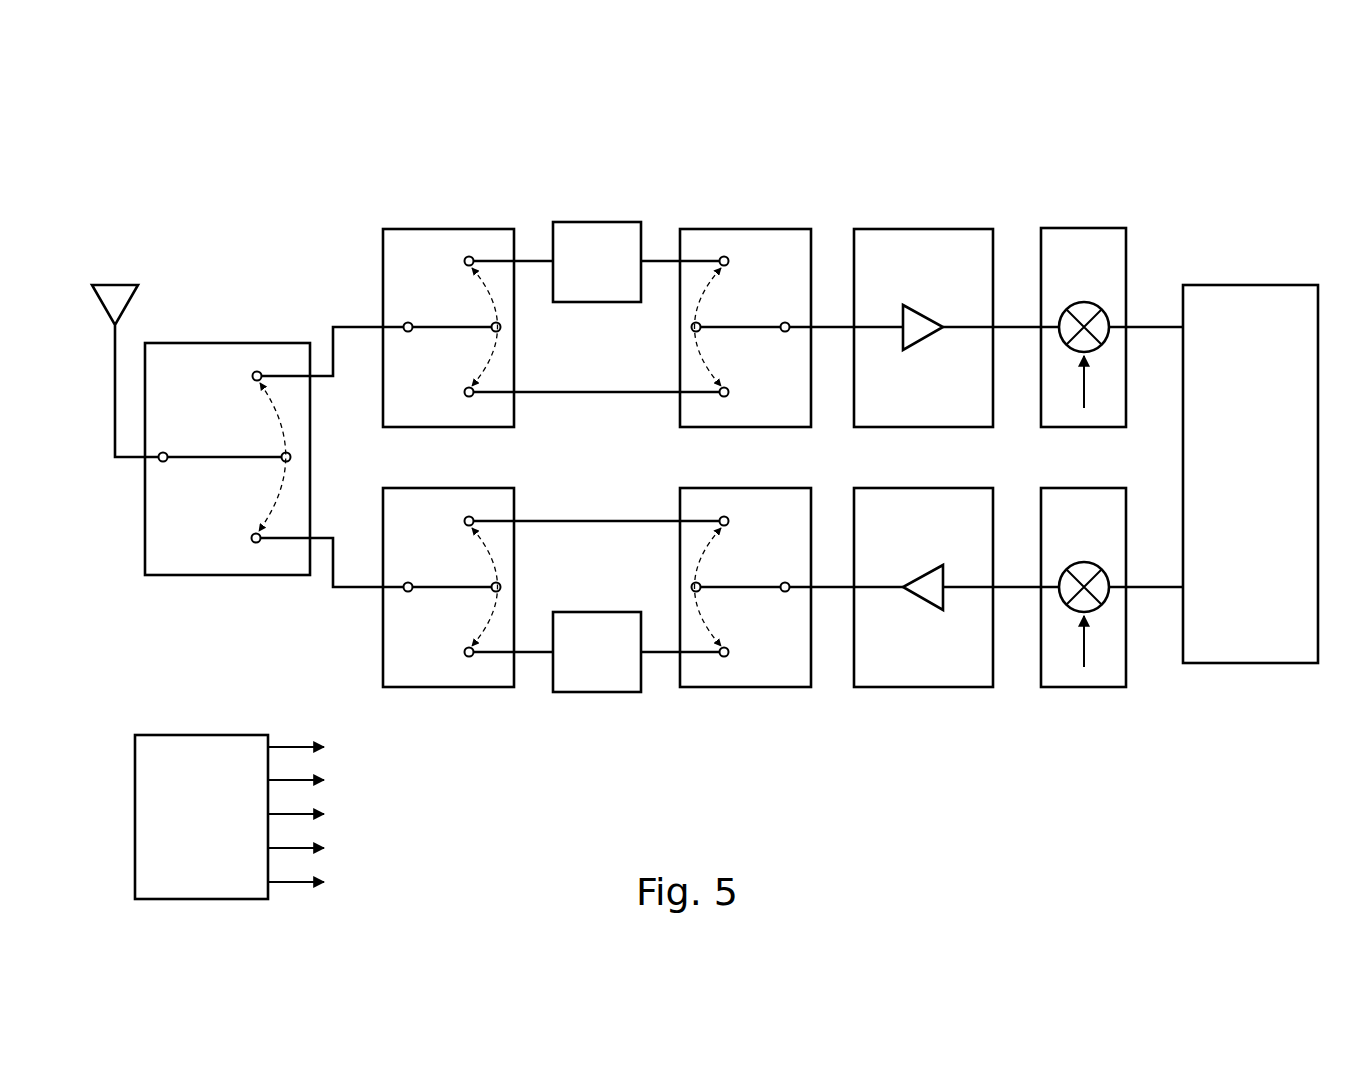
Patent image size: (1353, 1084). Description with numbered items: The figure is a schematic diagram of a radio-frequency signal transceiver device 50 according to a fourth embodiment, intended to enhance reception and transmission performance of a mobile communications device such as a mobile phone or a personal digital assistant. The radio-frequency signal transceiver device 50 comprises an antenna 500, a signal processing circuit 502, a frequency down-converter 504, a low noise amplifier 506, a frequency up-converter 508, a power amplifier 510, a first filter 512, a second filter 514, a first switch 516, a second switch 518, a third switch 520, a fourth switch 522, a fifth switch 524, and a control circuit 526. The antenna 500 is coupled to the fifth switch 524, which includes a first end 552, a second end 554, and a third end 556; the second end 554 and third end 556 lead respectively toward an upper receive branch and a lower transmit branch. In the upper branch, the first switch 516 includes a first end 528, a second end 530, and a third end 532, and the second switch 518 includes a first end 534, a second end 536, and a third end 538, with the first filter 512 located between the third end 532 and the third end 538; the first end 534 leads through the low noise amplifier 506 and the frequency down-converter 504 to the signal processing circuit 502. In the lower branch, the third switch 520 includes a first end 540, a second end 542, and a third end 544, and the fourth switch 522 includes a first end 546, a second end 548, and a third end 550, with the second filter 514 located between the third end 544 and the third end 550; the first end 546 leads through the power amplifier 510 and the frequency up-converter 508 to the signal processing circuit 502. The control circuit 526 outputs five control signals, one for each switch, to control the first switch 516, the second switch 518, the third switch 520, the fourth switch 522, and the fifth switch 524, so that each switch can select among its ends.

The radio-frequency signal transceiver device 50 is at (1207, 148).
The antenna 500 is at (115, 292).
The signal processing circuit 502 is at (1222, 284).
The frequency down-converter 504 is at (1064, 228).
The low noise amplifier 506 is at (958, 228).
The frequency up-converter 508 is at (1064, 488).
The power amplifier 510 is at (958, 488).
The first filter 512 is at (638, 262).
The second filter 514 is at (638, 652).
The first switch 516 is at (425, 227).
The second switch 518 is at (772, 227).
The third switch 520 is at (425, 487).
The fourth switch 522 is at (772, 487).
The fifth switch 524 is at (143, 538).
The control circuit 526 is at (160, 735).
The first end 528 is at (408, 322).
The second end 530 is at (474, 396).
The third end 532 is at (469, 256).
The first end 534 is at (785, 322).
The second end 536 is at (722, 398).
The third end 538 is at (724, 256).
The first end 540 is at (408, 582).
The second end 542 is at (469, 516).
The third end 544 is at (474, 656).
The first end 546 is at (785, 582).
The second end 548 is at (724, 516).
The third end 550 is at (724, 657).
The first end 552 is at (166, 452).
The second end 554 is at (257, 371).
The third end 556 is at (256, 543).